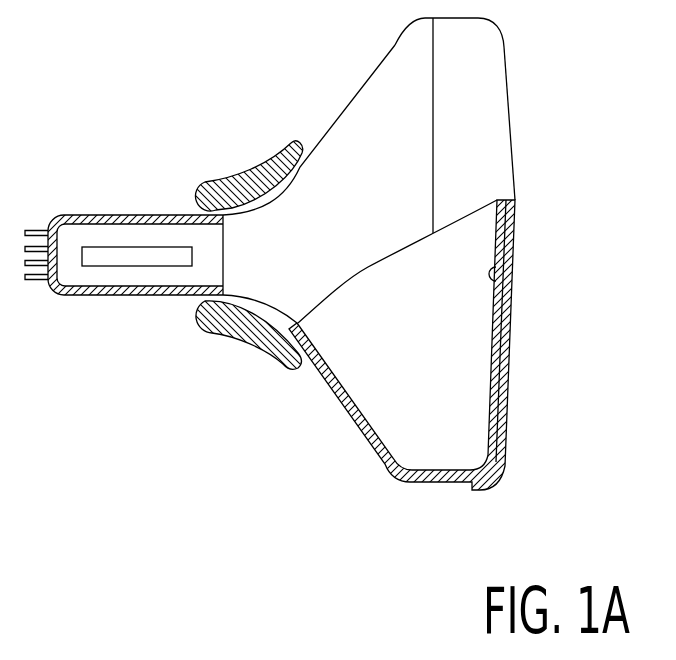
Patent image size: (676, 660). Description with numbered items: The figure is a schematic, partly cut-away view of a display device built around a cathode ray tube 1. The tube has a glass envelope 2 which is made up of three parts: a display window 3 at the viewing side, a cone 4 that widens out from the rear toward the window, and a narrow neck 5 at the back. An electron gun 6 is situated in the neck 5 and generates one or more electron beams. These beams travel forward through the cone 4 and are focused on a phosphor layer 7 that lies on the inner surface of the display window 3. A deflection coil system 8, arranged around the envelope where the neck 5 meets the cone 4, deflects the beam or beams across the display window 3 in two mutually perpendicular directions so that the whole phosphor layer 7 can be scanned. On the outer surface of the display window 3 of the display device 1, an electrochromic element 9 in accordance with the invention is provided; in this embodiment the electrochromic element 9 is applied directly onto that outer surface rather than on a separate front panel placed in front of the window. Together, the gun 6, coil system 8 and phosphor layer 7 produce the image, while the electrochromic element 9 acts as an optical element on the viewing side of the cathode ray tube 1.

The cathode ray tube 1 is at (251, 443).
The glass envelope 2 is at (384, 42).
The display window 3 is at (493, 124).
The cone 4 is at (357, 112).
The neck 5 is at (99, 212).
The electron gun 6 is at (97, 297).
The phosphor layer 7 is at (497, 280).
The deflection coil system 8 is at (272, 163).
The electrochromic element 9 is at (510, 352).